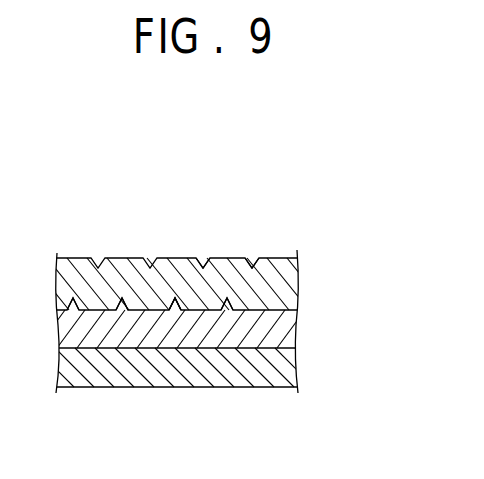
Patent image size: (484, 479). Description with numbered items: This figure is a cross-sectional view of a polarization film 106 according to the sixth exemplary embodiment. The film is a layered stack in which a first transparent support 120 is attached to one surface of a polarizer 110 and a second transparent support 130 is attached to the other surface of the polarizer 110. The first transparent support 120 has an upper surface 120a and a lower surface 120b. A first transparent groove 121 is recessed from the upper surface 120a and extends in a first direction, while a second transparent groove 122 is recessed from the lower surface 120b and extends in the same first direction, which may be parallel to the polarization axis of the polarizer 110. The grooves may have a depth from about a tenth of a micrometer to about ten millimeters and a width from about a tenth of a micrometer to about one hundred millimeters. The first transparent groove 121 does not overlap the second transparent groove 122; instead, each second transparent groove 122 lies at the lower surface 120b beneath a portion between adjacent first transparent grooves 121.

The polarization film 106 is at (209, 181).
The polarizer 110 is at (262, 337).
The first transparent support 120 is at (284, 274).
The upper surface 120a is at (252, 258).
The lower surface 120b is at (268, 305).
The first transparent groove 121 is at (203, 258).
The second transparent groove 122 is at (177, 298).
The second transparent support 130 is at (285, 368).